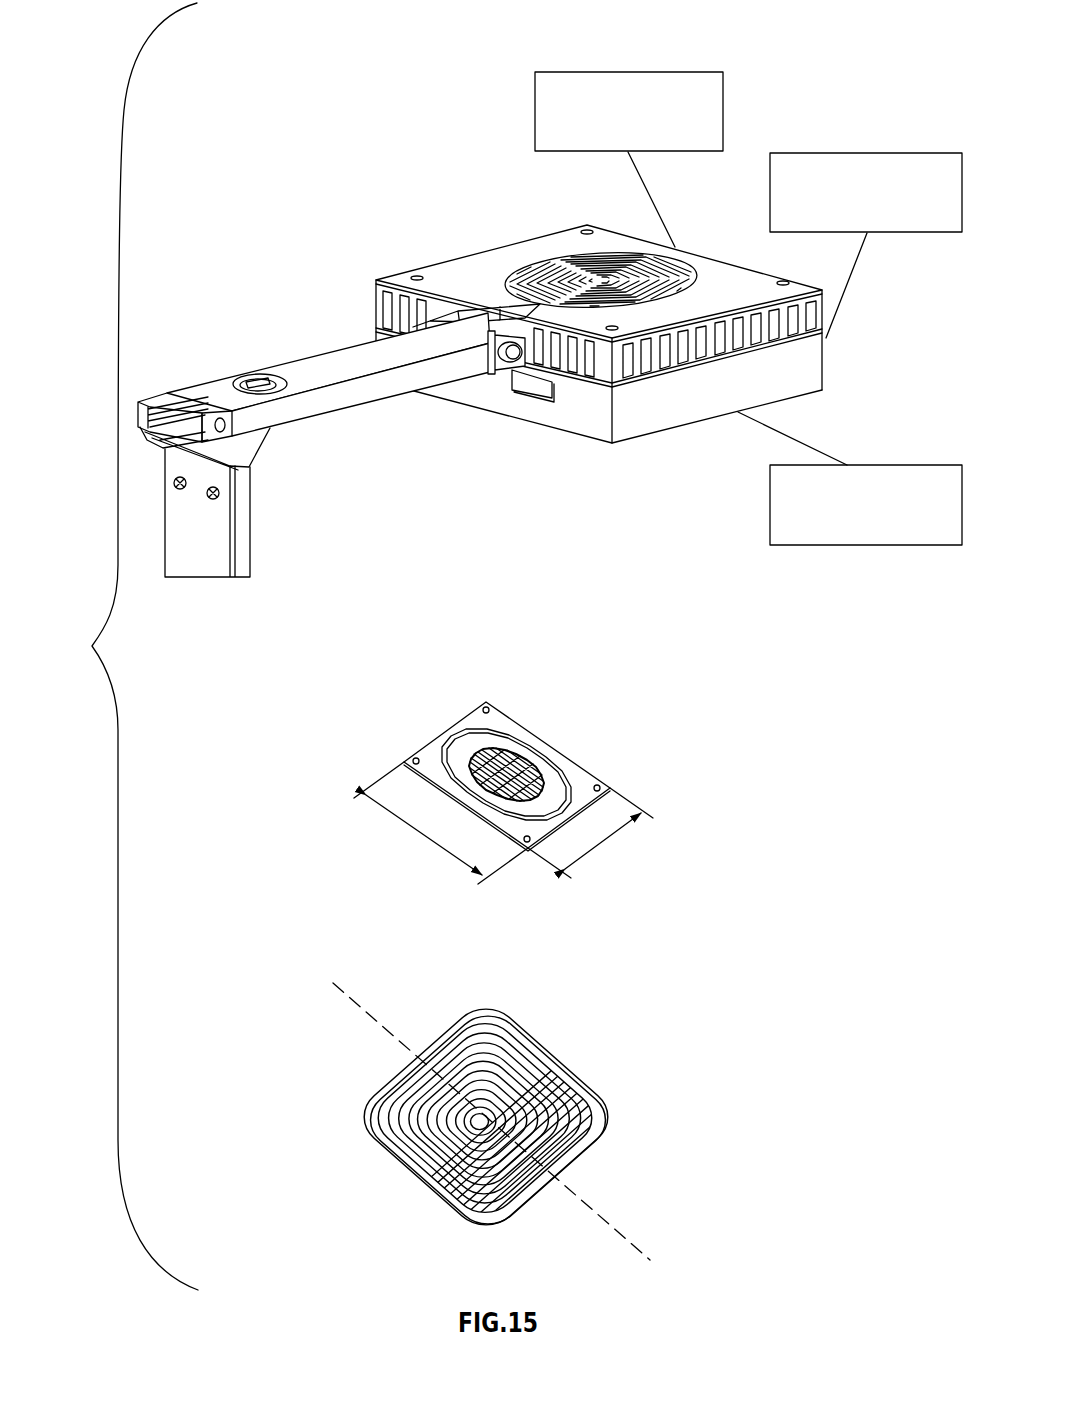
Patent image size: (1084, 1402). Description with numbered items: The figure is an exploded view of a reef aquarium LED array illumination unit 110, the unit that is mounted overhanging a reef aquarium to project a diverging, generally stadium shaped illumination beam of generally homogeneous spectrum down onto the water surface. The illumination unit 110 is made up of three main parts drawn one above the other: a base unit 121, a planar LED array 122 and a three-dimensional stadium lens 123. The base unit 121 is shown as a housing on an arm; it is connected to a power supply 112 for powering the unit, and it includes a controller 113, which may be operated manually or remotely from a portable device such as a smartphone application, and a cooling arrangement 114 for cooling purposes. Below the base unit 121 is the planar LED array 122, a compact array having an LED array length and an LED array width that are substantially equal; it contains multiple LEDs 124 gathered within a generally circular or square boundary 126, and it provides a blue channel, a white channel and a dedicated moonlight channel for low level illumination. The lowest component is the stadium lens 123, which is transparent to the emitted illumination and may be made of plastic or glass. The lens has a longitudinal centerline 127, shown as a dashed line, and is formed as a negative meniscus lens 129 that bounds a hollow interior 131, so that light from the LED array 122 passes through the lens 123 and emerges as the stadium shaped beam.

The reef aquarium LED array illumination unit 110 is at (121, 646).
The power supply 112 is at (866, 153).
The controller 113 is at (873, 545).
The cooling arrangement 114 is at (628, 72).
The base unit 121 is at (413, 213).
The planar LED array 122 is at (496, 750).
The 3D stadium lens 123 is at (540, 1108).
The LEDs 124 is at (524, 743).
The boundary 126 is at (541, 773).
The longitudinal centerline 127 is at (622, 1232).
The negative meniscus lens 129 is at (485, 1090).
The hollow interior 131 is at (421, 1172).